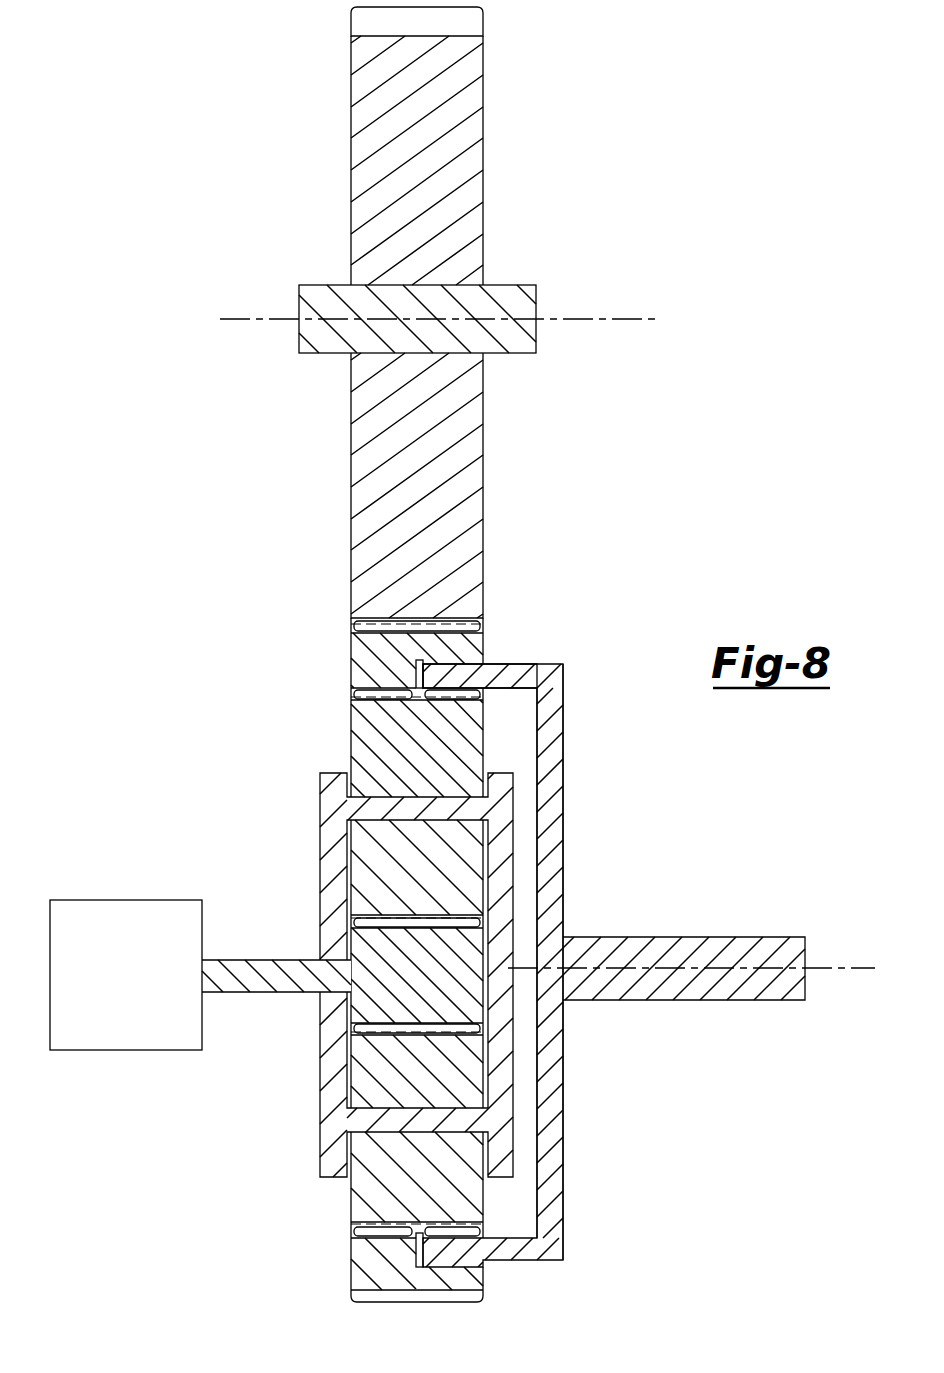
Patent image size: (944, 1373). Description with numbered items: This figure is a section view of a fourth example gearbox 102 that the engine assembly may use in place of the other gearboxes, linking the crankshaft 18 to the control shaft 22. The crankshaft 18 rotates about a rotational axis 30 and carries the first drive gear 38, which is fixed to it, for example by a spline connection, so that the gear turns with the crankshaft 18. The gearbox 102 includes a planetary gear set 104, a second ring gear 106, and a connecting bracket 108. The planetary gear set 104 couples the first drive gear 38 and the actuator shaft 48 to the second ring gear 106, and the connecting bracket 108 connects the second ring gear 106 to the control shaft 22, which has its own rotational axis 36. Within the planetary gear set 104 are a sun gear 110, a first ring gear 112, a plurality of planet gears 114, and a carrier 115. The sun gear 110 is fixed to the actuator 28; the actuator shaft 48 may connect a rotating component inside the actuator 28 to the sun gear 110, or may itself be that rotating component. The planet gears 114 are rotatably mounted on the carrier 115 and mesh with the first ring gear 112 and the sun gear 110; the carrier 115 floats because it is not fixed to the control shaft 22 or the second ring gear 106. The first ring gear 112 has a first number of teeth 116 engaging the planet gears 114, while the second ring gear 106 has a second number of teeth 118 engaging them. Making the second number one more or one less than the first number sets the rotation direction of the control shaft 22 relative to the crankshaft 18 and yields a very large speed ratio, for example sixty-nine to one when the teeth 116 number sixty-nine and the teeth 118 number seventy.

The crankshaft 18 is at (522, 285).
The control shaft 22 is at (748, 937).
The actuator 28 is at (121, 900).
The rotational axis 30 is at (613, 318).
The rotational axis 36 is at (822, 967).
The first drive gear 38 is at (483, 102).
The actuator shaft 48 is at (255, 960).
The gearbox 102 is at (200, 567).
The planetary gear set 104 is at (318, 597).
The second ring gear 106 is at (458, 662).
The connecting bracket 108 is at (563, 745).
The sun gear 110 is at (352, 998).
The first ring gear 112 is at (351, 663).
The planet gears 114 is at (351, 746).
The carrier 115 is at (515, 838).
The first number of teeth 116 is at (351, 694).
The second number of teeth 118 is at (542, 940).